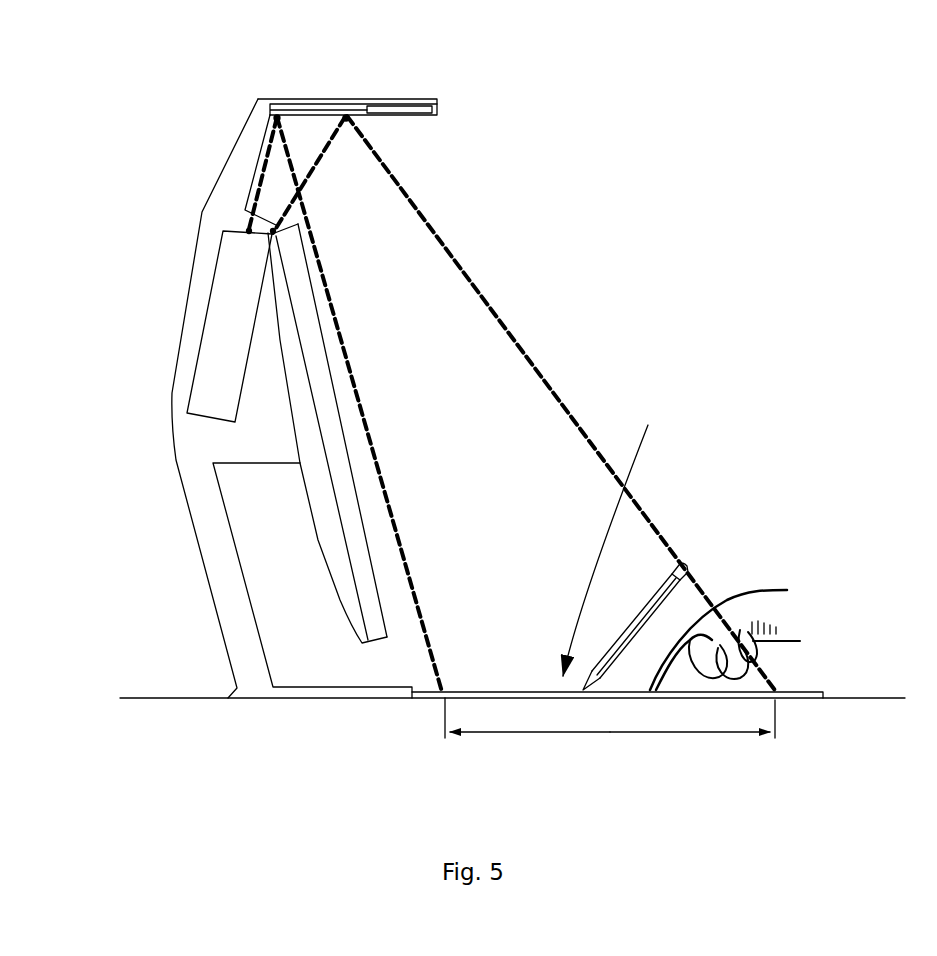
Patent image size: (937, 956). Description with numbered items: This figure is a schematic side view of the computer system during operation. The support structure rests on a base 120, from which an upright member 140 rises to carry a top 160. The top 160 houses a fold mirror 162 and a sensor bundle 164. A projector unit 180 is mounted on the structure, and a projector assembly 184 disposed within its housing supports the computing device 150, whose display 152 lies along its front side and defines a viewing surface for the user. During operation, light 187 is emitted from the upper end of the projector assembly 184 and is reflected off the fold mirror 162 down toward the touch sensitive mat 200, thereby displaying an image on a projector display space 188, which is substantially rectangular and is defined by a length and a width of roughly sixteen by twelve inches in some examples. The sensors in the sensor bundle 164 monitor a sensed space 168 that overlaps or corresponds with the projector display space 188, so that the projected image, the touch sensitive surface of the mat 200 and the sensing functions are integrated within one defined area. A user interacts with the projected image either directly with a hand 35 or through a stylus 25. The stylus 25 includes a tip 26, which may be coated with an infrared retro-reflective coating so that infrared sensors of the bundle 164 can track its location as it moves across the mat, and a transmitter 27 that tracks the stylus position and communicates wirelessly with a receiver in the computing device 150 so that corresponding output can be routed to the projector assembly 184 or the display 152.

The base 120 is at (263, 706).
The upright member 140 is at (168, 279).
The computing device 150 is at (313, 546).
The display 152 is at (357, 492).
The top 160 is at (301, 65).
The fold mirror 162 is at (328, 99).
The sensor bundle 164 is at (401, 99).
The sensed space 168 is at (610, 737).
The projector unit 180 is at (198, 440).
The projector assembly 184 is at (212, 247).
The light 187 is at (408, 190).
The projector display space 188 is at (629, 534).
The touch sensitive mat 200 is at (812, 700).
The stylus 25 is at (650, 610).
The tip 26 is at (585, 674).
The transmitter 27 is at (685, 560).
The user's hand 35 is at (787, 590).